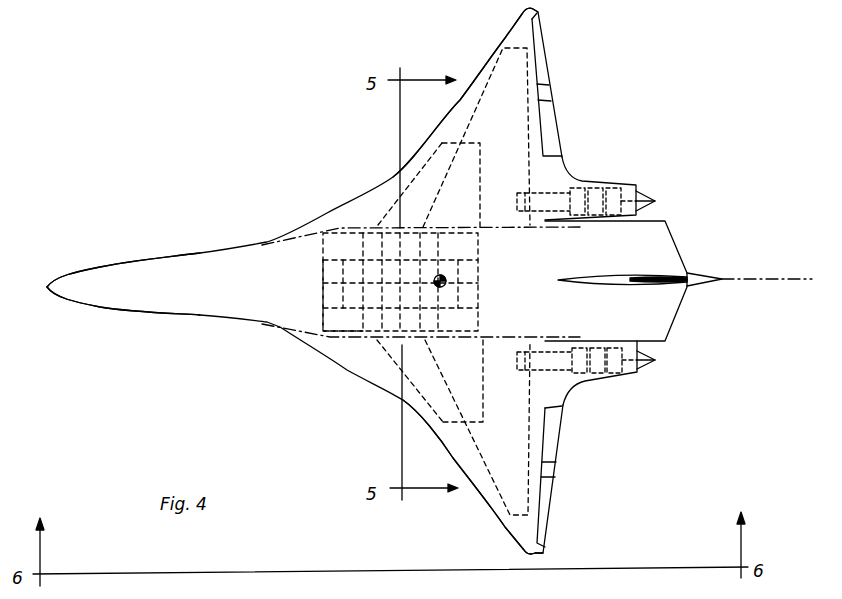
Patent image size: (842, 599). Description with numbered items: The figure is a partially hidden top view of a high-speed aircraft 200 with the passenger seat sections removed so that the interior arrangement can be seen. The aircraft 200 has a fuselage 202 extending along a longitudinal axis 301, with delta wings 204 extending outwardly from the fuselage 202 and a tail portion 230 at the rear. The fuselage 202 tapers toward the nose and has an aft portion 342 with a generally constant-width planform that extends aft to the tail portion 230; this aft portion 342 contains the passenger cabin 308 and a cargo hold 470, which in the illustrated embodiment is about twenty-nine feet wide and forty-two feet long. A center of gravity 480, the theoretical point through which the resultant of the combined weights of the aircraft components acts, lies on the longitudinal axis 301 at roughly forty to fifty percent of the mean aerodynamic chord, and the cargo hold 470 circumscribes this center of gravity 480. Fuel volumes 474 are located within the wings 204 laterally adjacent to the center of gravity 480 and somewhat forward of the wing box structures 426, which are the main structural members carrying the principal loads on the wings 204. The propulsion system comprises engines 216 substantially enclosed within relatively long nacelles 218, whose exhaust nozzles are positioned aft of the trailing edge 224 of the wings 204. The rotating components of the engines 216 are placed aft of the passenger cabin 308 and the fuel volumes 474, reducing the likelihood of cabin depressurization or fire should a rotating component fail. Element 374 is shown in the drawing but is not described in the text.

The high-speed aircraft 200 is at (252, 118).
The fuselage 202 is at (77, 303).
The delta wings 204 is at (518, 33).
The engines 216 is at (652, 204).
The nacelles 218 is at (622, 185).
The trailing edge 224 is at (550, 55).
The tail portion 230 is at (670, 350).
The longitudinal axis 301 is at (785, 246).
The passenger cabin 308 is at (312, 288).
The aft portion 342 is at (529, 216).
The wing structural box 374 is at (480, 160).
The wing box structures 426 is at (553, 96).
The cargo hold 470 is at (323, 325).
The fuel volumes 474 is at (390, 208).
The center of gravity 480 is at (441, 274).